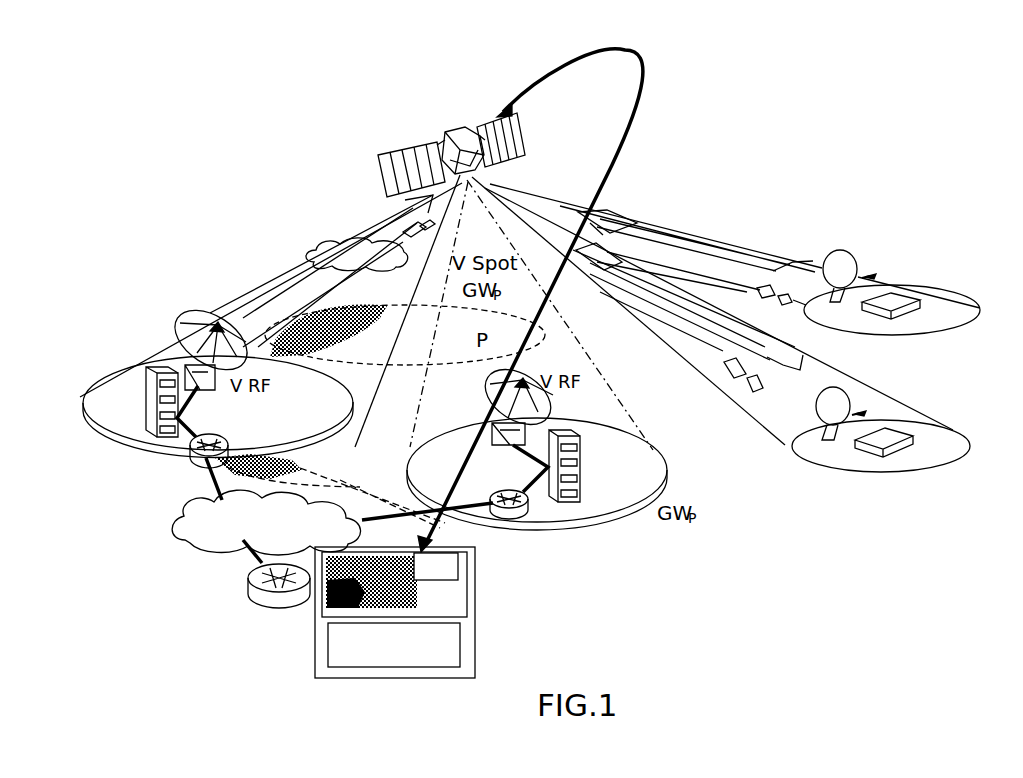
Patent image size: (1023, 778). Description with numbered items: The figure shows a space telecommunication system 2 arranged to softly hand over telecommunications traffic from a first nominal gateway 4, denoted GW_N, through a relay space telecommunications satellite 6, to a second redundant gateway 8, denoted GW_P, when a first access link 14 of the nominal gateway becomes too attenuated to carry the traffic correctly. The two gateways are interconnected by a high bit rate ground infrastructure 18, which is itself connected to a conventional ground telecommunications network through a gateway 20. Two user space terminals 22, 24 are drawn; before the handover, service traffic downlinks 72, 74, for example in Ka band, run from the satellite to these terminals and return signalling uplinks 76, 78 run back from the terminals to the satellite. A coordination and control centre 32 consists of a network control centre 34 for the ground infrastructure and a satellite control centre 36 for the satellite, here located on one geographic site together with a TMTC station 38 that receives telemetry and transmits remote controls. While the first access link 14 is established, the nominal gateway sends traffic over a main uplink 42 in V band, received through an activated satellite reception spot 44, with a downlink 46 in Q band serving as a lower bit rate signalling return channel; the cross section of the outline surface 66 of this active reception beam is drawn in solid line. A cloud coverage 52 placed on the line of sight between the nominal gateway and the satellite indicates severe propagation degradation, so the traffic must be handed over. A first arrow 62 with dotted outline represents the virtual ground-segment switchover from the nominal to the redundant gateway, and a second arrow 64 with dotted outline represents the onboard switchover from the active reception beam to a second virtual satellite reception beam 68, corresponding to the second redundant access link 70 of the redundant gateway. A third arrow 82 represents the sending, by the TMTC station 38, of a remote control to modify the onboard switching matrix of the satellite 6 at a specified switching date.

The space telecommunication system 2 is at (187, 131).
The relay space telecommunications satellite 6 is at (457, 128).
The third arrow 82 is at (647, 88).
The outline surface of the first satellite reception beam 66 is at (152, 345).
The second virtual satellite reception beam 68 is at (423, 372).
The second redundant access link 70 is at (602, 402).
The main uplink 42 is at (370, 217).
The satellite reception spot 44 is at (273, 280).
The downlink 46 is at (343, 283).
The first access link 14 is at (267, 297).
The cloud coverage 52 is at (308, 253).
The first nominal gateway 4 is at (147, 400).
The second arrow 64 is at (327, 333).
The first arrow 62 is at (280, 467).
The high bit rate ground infrastructure 18 is at (187, 503).
The gateway 20 is at (248, 583).
The coordination and control centre 32 is at (475, 632).
The control centre SCC 36 is at (477, 588).
The TMTC station 38 is at (462, 563).
The network control centre NCC 34 is at (328, 637).
The second redundant gateway 8 is at (583, 463).
The service traffic downlink 72 is at (713, 242).
The return signalling uplink 76 is at (723, 280).
The return signalling uplink 78 is at (667, 327).
The service traffic downlink 74 is at (787, 377).
The user space terminal 22 is at (898, 294).
The user space terminal 24 is at (855, 440).